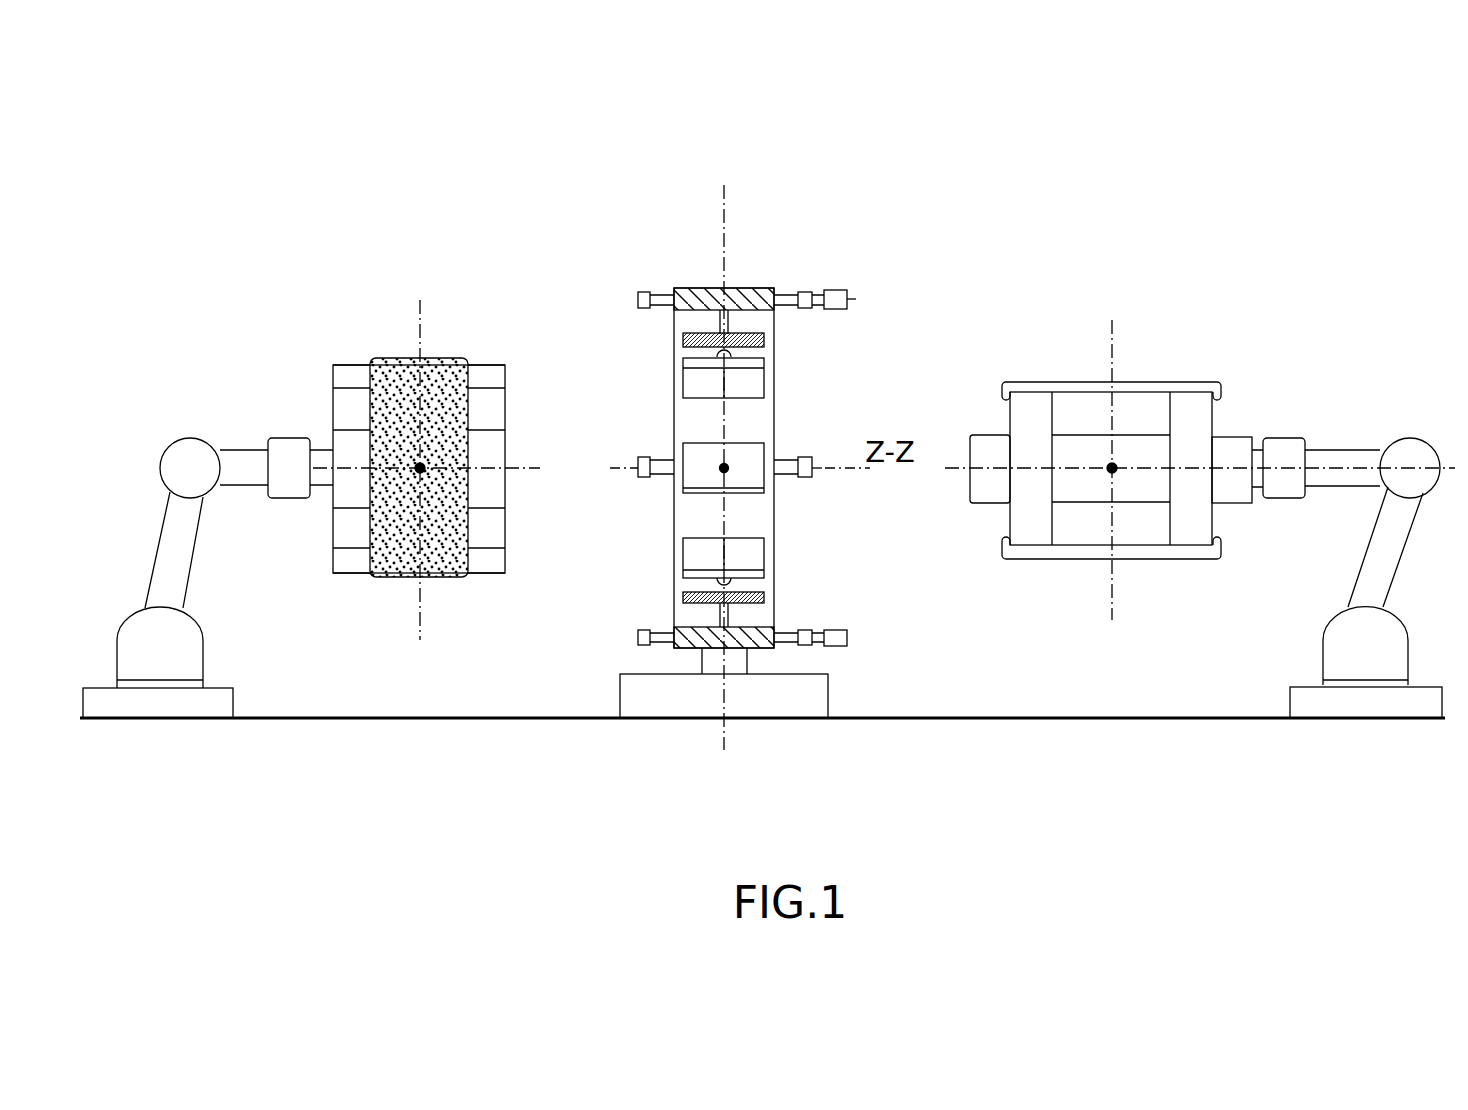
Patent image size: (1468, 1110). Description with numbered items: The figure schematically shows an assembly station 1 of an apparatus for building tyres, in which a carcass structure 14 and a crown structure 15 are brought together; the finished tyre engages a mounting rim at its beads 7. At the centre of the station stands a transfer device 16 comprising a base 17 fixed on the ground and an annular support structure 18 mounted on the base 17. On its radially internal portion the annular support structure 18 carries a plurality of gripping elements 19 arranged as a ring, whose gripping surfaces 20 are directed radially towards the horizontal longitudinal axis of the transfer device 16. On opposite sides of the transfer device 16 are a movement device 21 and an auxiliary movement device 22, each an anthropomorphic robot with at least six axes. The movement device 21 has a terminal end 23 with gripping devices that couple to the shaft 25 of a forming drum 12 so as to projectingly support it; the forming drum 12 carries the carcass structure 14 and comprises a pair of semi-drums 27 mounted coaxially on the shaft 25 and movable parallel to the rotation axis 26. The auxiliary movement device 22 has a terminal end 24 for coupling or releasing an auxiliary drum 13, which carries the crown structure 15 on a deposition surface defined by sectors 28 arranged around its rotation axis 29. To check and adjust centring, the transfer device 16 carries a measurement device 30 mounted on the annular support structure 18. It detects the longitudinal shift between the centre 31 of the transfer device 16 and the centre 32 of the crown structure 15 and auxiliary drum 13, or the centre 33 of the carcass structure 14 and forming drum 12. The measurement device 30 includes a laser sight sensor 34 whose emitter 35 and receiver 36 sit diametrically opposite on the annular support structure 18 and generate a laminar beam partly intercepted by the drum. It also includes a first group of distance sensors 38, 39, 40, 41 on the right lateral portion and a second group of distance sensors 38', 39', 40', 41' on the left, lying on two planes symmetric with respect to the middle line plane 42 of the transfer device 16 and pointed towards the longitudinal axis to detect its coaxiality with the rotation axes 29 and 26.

The assembly station 1 is at (997, 161).
The beads 7 is at (1003, 385).
The forming drum 12 is at (992, 379).
The auxiliary drum 13 is at (486, 363).
The carcass structure 14 is at (1148, 373).
The crown structure 15 is at (374, 353).
The transfer device 16 is at (614, 252).
The base 17 is at (620, 693).
The annular support structure 18 is at (708, 288).
The gripping elements 19 is at (772, 385).
The gripping surfaces 20 is at (688, 382).
The movement device 21 is at (1372, 497).
The auxiliary movement device 22 is at (168, 423).
The terminal end 23 is at (1296, 448).
The terminal end 24 is at (290, 448).
The shaft 25 is at (1232, 437).
The rotation axis 26 is at (950, 470).
The semi-drums 27 is at (1010, 421).
The sectors 28 is at (492, 450).
The rotation axis 29 is at (497, 468).
The measurement device 30 is at (629, 288).
The centre 31 is at (720, 474).
The centre 32 is at (420, 470).
The centre 33 is at (1110, 466).
The sensor 34 is at (857, 283).
The emitter 35 is at (850, 298).
The receiver 36 is at (850, 637).
The distance sensor 38 is at (808, 247).
The distance sensor 38' is at (642, 250).
The distance sensor 39 is at (844, 495).
The distance sensor 39' is at (601, 491).
The distance sensor 40 is at (820, 704).
The distance sensor 40' is at (607, 622).
The distance sensor 41 is at (823, 430).
The distance sensor 41' is at (628, 427).
The middle line plane 42 is at (724, 212).